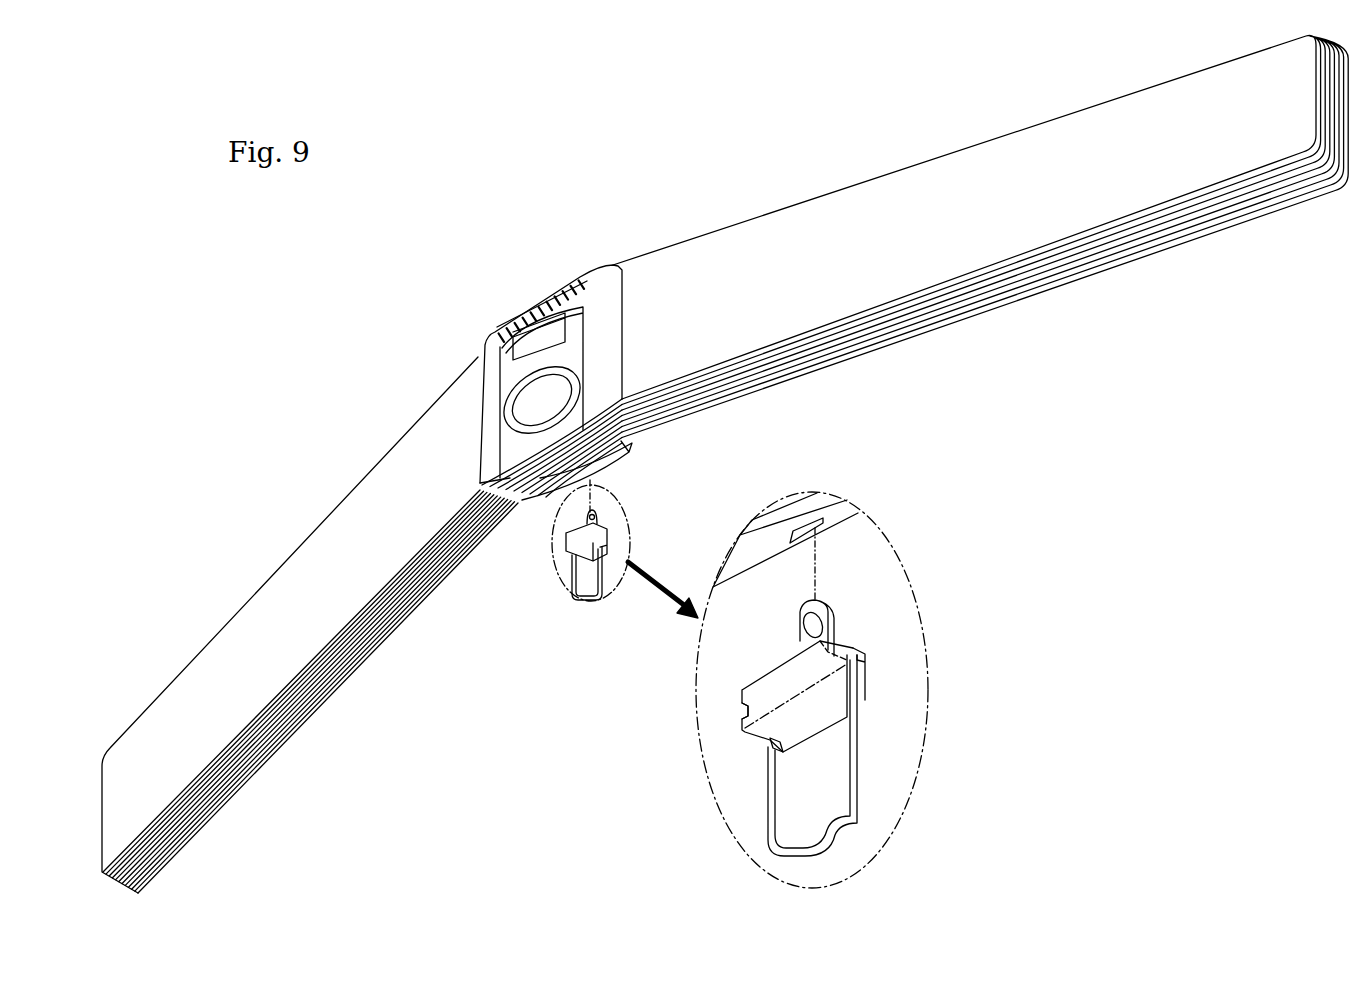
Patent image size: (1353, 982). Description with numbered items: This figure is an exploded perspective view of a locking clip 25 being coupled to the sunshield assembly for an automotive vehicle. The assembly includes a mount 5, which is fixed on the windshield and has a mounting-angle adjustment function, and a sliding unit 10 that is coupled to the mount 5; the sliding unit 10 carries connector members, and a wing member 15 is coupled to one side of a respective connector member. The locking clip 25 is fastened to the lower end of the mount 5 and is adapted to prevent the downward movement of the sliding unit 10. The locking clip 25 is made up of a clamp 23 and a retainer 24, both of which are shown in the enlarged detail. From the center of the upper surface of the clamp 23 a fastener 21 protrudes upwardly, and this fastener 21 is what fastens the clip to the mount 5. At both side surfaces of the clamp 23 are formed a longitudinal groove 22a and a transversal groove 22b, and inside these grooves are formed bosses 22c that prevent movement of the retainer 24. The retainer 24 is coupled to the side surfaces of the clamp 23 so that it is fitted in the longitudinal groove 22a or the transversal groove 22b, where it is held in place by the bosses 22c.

The mount 5 is at (612, 467).
The sliding unit 10 is at (632, 442).
The wing member 15 is at (826, 490).
The fastener 21 is at (838, 610).
The longitudinal groove 22a is at (780, 741).
The transversal groove 22b is at (865, 656).
The boss 22c is at (742, 692).
The clamp 23 is at (748, 731).
The retainer 24 is at (773, 794).
The locking clip 25 is at (569, 616).